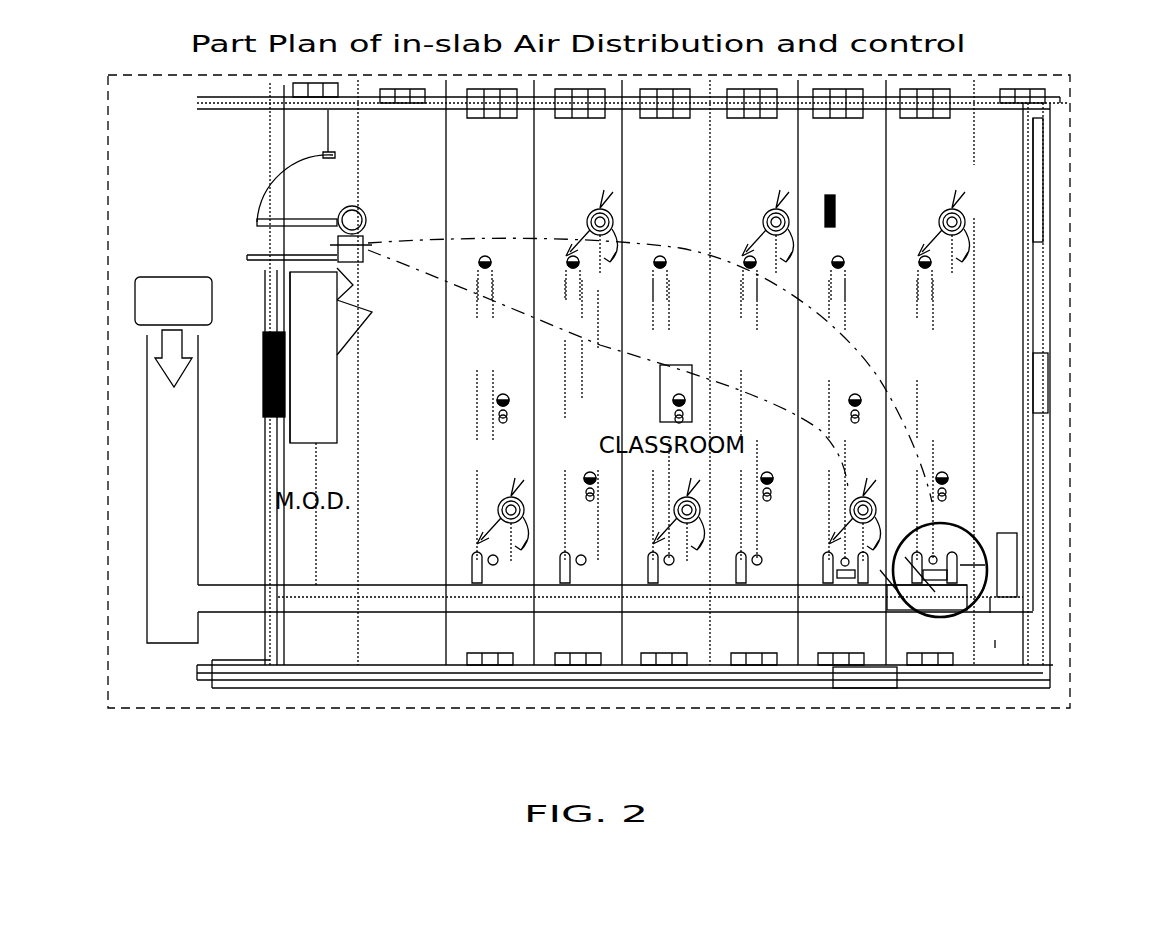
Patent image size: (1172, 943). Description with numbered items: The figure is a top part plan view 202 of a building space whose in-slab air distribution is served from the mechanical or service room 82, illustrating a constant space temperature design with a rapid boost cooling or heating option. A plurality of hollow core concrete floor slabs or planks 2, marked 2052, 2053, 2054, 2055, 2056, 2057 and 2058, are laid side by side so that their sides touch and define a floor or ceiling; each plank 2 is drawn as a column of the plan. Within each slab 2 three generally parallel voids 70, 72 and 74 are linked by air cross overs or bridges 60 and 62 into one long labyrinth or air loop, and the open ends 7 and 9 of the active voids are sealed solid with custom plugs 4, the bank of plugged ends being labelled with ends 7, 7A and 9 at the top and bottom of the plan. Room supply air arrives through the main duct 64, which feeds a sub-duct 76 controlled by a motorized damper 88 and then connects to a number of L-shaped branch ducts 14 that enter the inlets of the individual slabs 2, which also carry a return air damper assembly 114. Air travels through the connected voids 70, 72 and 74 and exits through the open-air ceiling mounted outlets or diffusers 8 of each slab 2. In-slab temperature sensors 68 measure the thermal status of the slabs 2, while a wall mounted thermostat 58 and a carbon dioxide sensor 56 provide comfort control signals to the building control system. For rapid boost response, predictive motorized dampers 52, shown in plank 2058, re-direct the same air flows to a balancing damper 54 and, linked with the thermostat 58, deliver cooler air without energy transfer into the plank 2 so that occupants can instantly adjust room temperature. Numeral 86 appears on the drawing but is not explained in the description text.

The hollow core concrete floor slab 2 is at (903, 210).
The custom plug 4 is at (508, 125).
The slab end 7 is at (778, 125).
The duct branch 7A is at (838, 103).
The slab end 9 is at (669, 93).
The ceiling mounted outlet 8 is at (605, 220).
The L-shaped branch duct 14 is at (472, 558).
The motorized damper 52 is at (932, 562).
The balancing damper 54 is at (743, 568).
The CO2 sensor 56 is at (337, 212).
The wall mounted thermostat 58 is at (348, 249).
The air cross over 60 is at (485, 258).
The air cross over 62 is at (580, 478).
The main duct 64 is at (178, 507).
The in-slab temperature sensor 68 is at (822, 207).
The hollow core void 70 is at (918, 403).
The hollow core void 72 is at (935, 430).
The hollow core void 74 is at (947, 483).
The sub-duct 76 is at (267, 583).
The mechanical or service room 82 is at (173, 332).
The mixing damper 86 is at (393, 365).
The motorized damper 88 is at (308, 608).
The return air damper assembly 114 is at (322, 378).
The space top part plan view 202 is at (1072, 560).
The hollow core plank 2052 is at (407, 349).
The hollow core plank 2053 is at (490, 349).
The hollow core plank 2054 is at (578, 349).
The hollow core plank 2055 is at (665, 349).
The hollow core plank 2056 is at (752, 349).
The hollow core plank 2057 is at (840, 349).
The hollow core plank 2058 is at (928, 349).